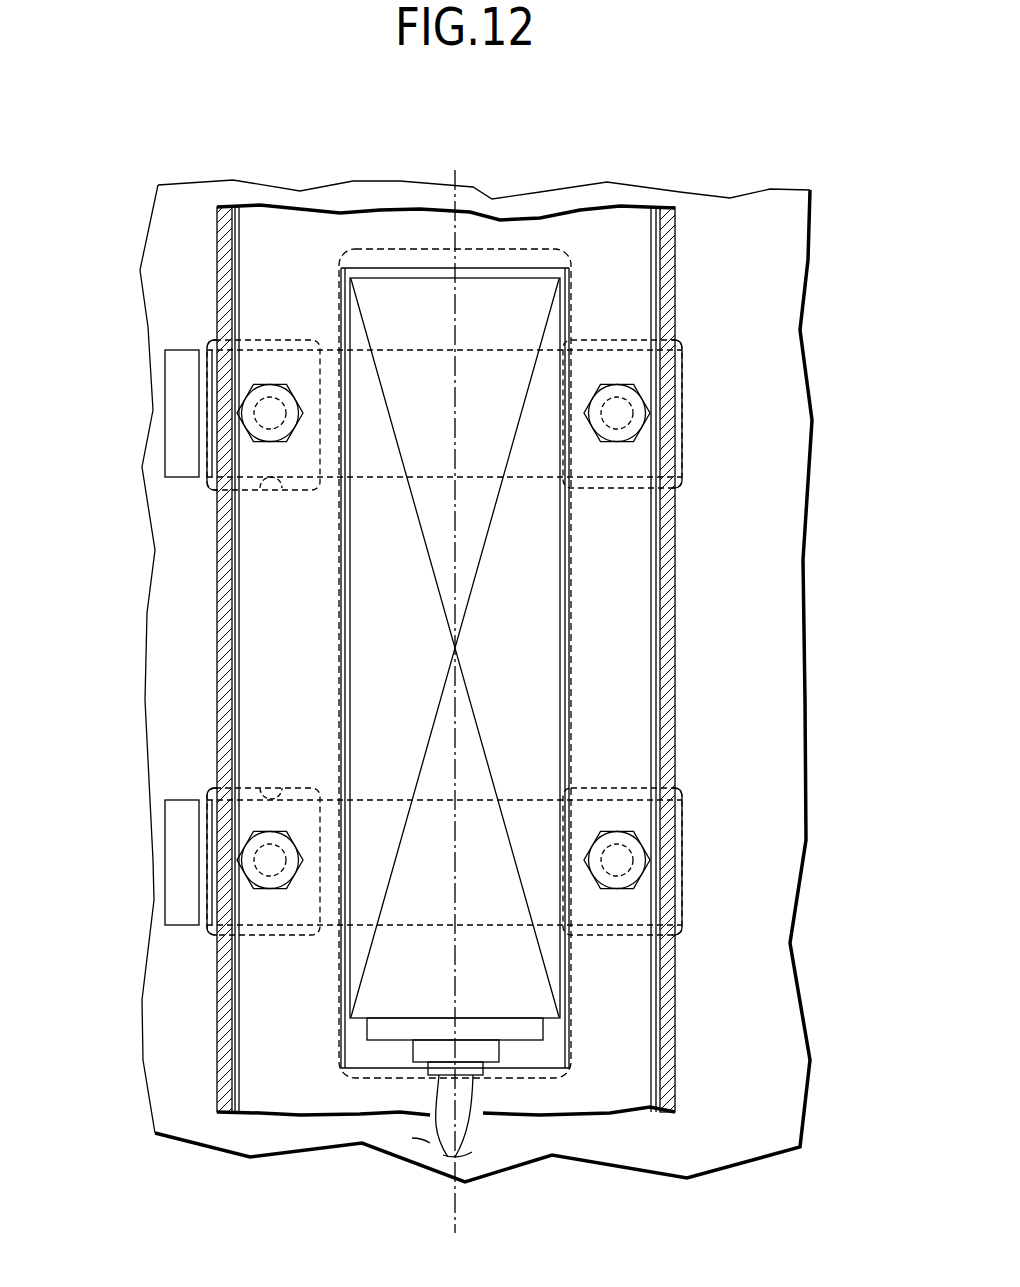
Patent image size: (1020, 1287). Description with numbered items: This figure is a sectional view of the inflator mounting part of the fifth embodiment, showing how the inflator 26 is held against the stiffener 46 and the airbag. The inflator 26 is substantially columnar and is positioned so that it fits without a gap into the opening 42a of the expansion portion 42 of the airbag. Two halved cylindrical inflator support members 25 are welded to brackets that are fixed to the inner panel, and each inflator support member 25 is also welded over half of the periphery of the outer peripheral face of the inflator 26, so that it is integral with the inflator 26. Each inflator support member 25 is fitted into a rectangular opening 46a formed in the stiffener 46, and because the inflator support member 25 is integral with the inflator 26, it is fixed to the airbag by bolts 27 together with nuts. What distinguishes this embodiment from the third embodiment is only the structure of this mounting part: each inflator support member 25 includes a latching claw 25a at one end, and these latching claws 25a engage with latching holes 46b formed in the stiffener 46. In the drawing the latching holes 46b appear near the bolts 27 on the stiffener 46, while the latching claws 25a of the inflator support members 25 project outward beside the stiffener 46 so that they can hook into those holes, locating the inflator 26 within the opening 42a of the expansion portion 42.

The inflator support member 25 is at (182, 348).
The latching claw 25a is at (175, 405).
The inflator 26 is at (540, 600).
The bolt 27 is at (275, 392).
The expansion portion 42 is at (677, 1037).
The opening 42a is at (342, 697).
The stiffener 46 is at (177, 592).
The rectangular opening 46a is at (565, 758).
The latching hole 46b is at (282, 788).